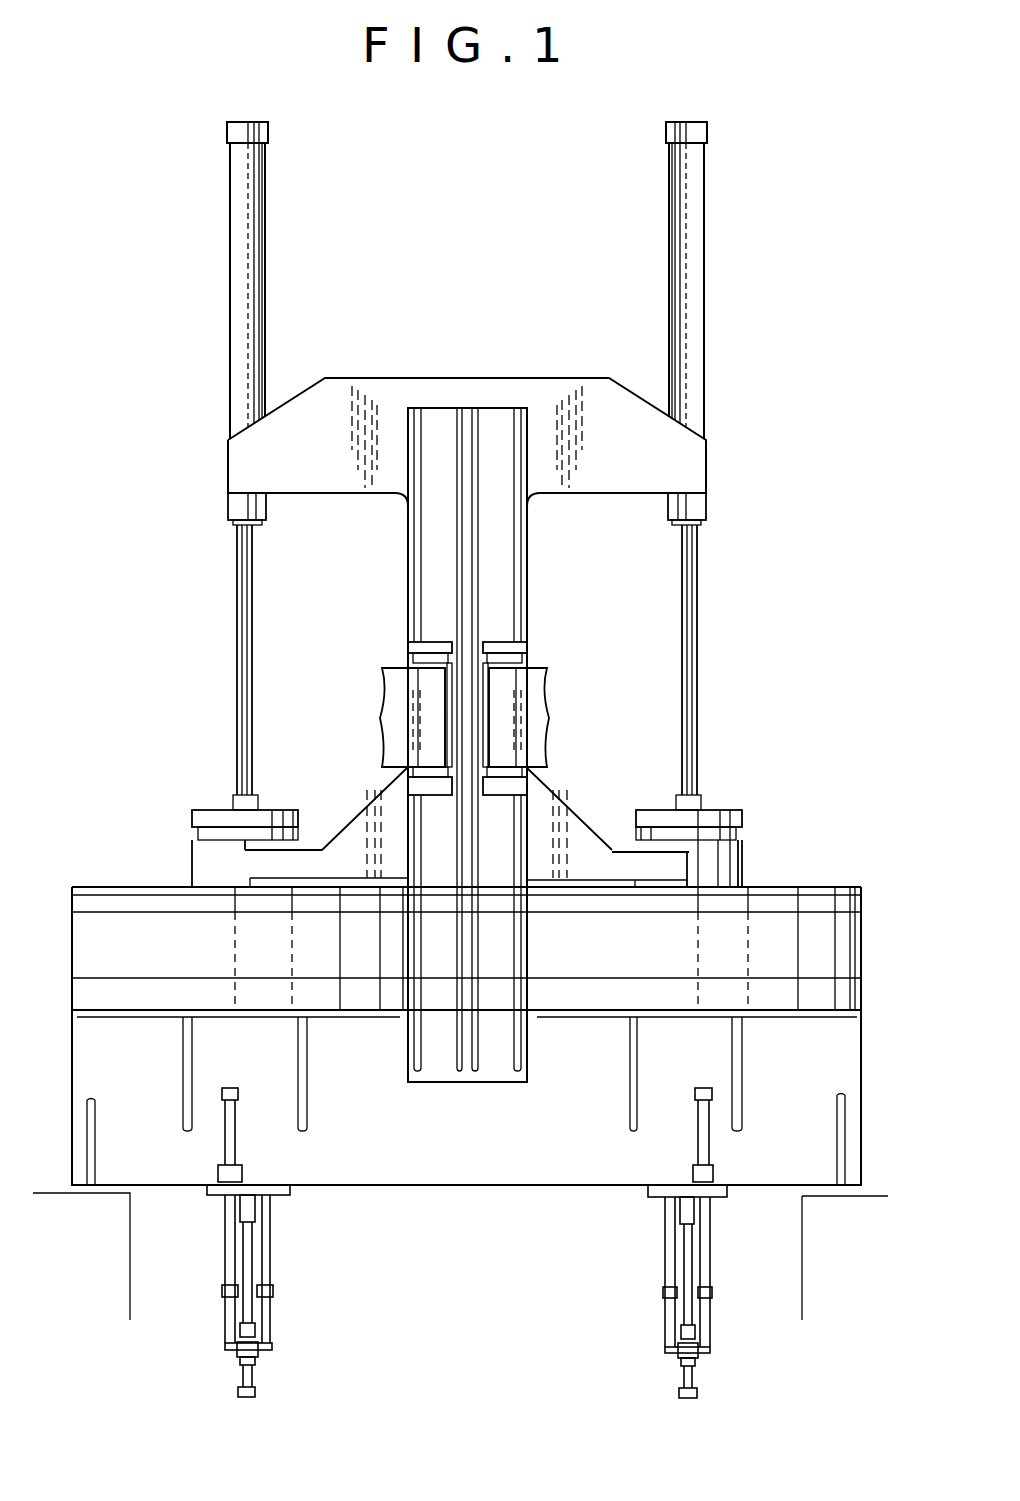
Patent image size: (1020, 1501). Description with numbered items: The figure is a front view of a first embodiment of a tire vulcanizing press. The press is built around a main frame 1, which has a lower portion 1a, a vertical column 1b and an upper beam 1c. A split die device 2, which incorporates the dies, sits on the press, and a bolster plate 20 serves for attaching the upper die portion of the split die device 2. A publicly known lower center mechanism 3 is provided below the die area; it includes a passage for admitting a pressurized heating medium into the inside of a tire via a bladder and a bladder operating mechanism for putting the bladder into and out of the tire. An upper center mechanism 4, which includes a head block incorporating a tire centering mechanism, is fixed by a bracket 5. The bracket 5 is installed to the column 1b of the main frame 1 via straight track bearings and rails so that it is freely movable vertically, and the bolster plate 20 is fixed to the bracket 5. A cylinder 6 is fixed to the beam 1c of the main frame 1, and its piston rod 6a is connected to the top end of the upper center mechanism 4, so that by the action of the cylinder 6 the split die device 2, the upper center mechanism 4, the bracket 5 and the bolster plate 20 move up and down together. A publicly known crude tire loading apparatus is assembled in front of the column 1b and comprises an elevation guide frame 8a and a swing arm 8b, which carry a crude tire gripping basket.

The main frame 1 is at (497, 1165).
The lower frame portion 1a is at (862, 1060).
The column 1b is at (528, 557).
The beam 1c is at (548, 395).
The split die device 2 is at (862, 942).
The lower center mechanism 3 is at (665, 1243).
The upper center mechanism 4 is at (738, 835).
The bracket 5 is at (638, 868).
The cylinder 6 is at (675, 276).
The piston rod 6a is at (693, 763).
The elevation guide frame 8a is at (500, 596).
The swing arm 8b is at (523, 748).
The bolster plate 20 is at (822, 886).